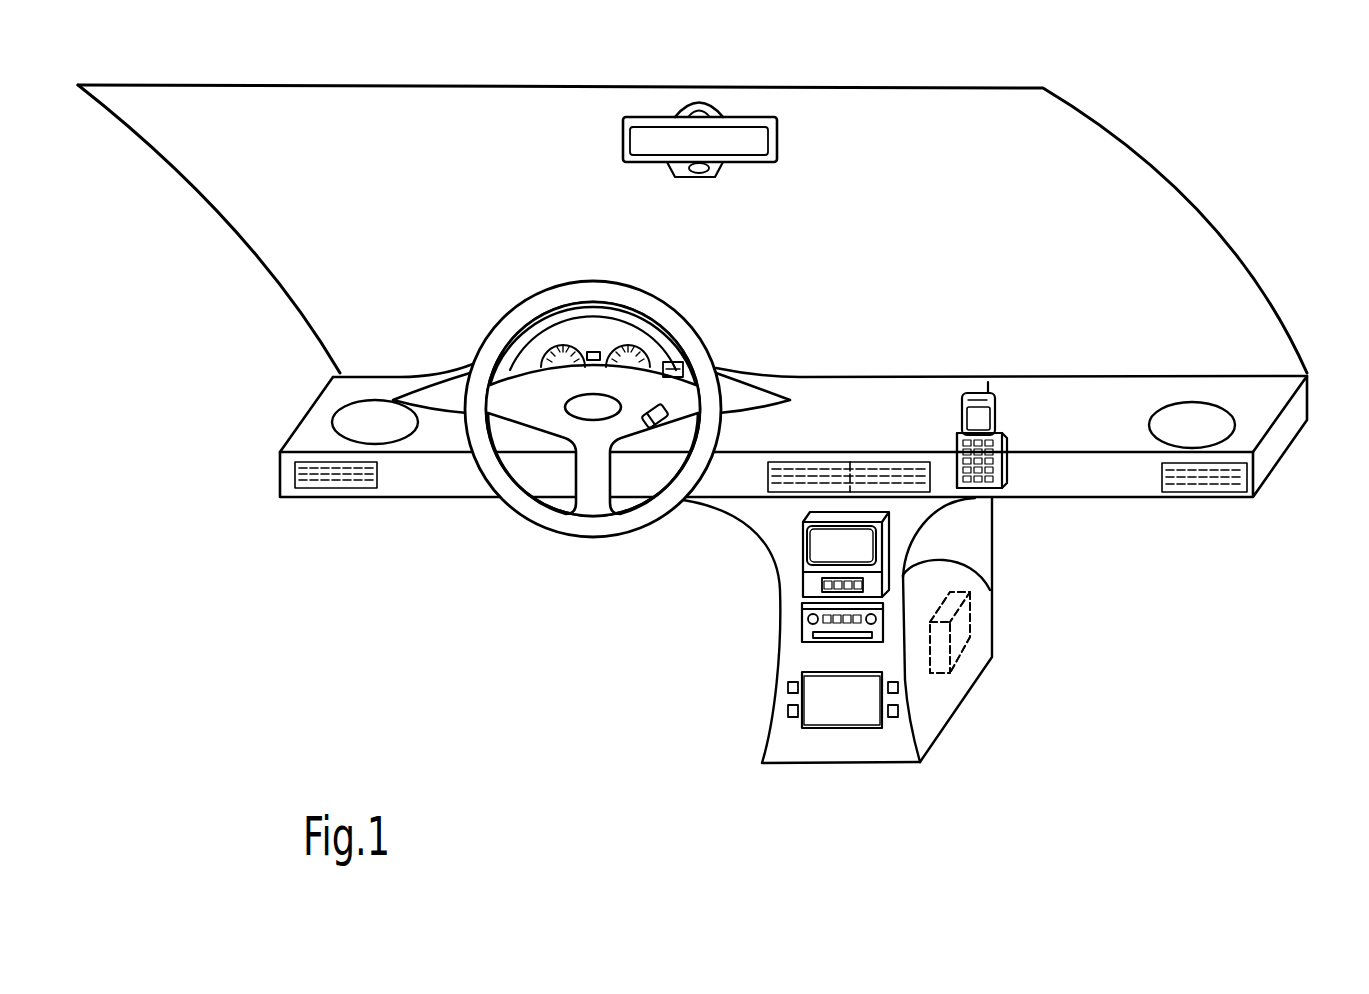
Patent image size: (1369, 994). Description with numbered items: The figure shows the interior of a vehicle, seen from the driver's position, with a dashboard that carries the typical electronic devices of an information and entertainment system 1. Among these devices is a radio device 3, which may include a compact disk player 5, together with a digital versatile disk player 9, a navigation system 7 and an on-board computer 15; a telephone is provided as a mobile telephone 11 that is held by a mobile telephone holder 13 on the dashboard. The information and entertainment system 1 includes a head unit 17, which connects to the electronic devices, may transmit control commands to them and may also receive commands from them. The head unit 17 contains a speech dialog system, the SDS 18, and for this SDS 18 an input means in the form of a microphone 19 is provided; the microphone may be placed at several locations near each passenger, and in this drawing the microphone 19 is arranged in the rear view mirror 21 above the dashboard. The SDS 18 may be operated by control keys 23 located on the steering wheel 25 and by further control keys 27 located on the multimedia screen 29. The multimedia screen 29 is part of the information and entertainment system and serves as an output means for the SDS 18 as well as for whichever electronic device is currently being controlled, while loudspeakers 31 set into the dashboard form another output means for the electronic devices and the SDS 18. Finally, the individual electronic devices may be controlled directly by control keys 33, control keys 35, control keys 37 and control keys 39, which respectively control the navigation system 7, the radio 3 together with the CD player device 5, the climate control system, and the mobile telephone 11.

The information and entertainment system 1 is at (1268, 84).
The radio device 3 is at (883, 637).
The compact disk (CD) player 5 is at (863, 640).
The navigation system 7 is at (803, 562).
The digital versatile disk (DVD) player 9 is at (857, 723).
The mobile telephone 11 is at (995, 415).
The mobile telephone holder 13 is at (1000, 485).
The on-board computer 15 is at (593, 352).
The head unit 17 is at (970, 638).
The SDS (speech dialog system) 18 is at (950, 632).
The microphone 19 is at (673, 170).
The rear view mirror 21 is at (770, 113).
The control keys 23 is at (640, 417).
The steering wheel 25 is at (508, 505).
The control keys 27 is at (823, 587).
The multimedia screen 29 is at (817, 543).
The loudspeakers 31 is at (337, 412).
The control keys 33 is at (992, 588).
The control keys 35 is at (802, 618).
The control keys 37 is at (787, 710).
The control keys 39 is at (955, 442).